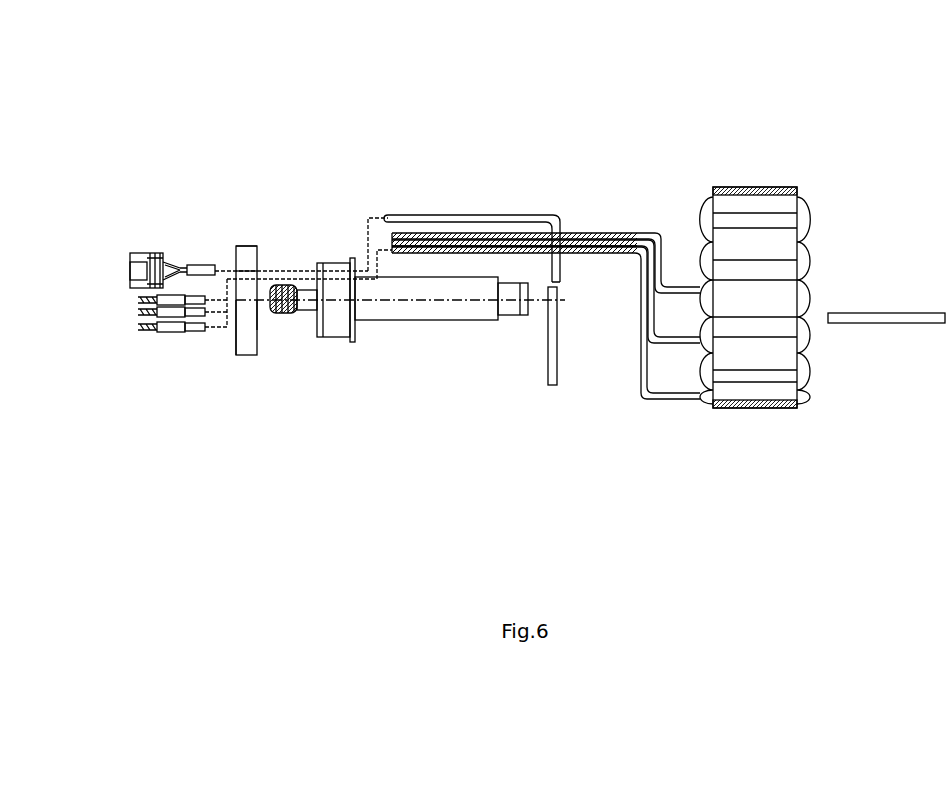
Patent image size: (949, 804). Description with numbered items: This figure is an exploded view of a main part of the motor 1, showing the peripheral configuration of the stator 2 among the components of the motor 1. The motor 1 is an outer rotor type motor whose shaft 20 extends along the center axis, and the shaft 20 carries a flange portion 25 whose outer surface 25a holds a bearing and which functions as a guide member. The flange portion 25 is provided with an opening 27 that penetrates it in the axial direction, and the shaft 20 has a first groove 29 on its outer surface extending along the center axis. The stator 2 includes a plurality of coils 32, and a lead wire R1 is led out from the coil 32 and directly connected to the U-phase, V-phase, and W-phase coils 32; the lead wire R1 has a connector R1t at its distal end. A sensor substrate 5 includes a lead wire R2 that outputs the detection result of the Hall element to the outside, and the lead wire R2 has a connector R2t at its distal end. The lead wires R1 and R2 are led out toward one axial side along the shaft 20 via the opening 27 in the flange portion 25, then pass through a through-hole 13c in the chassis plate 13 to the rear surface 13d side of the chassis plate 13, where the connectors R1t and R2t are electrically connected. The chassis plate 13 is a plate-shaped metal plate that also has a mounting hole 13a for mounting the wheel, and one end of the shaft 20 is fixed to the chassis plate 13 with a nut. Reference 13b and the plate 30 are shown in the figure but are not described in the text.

The motor 1 is at (829, 136).
The stator 2 is at (757, 411).
The sensor substrate 5 is at (553, 386).
The chassis plate 13 is at (248, 356).
The mounting hole 13a is at (258, 318).
The connector plate portion 13b is at (257, 252).
The through-hole 13c is at (243, 280).
The rear surface 13d is at (236, 336).
The shaft 20 is at (400, 320).
The flange portion 25 is at (336, 340).
The outer surface 25a is at (477, 245).
The opening 27 is at (334, 262).
The first groove 29 is at (472, 320).
The plate 30 is at (898, 323).
The coil 32 is at (705, 400).
The lead wire R1 is at (607, 233).
The lead wire R2 is at (418, 215).
The connector R1t is at (147, 339).
The connector R2t is at (162, 251).